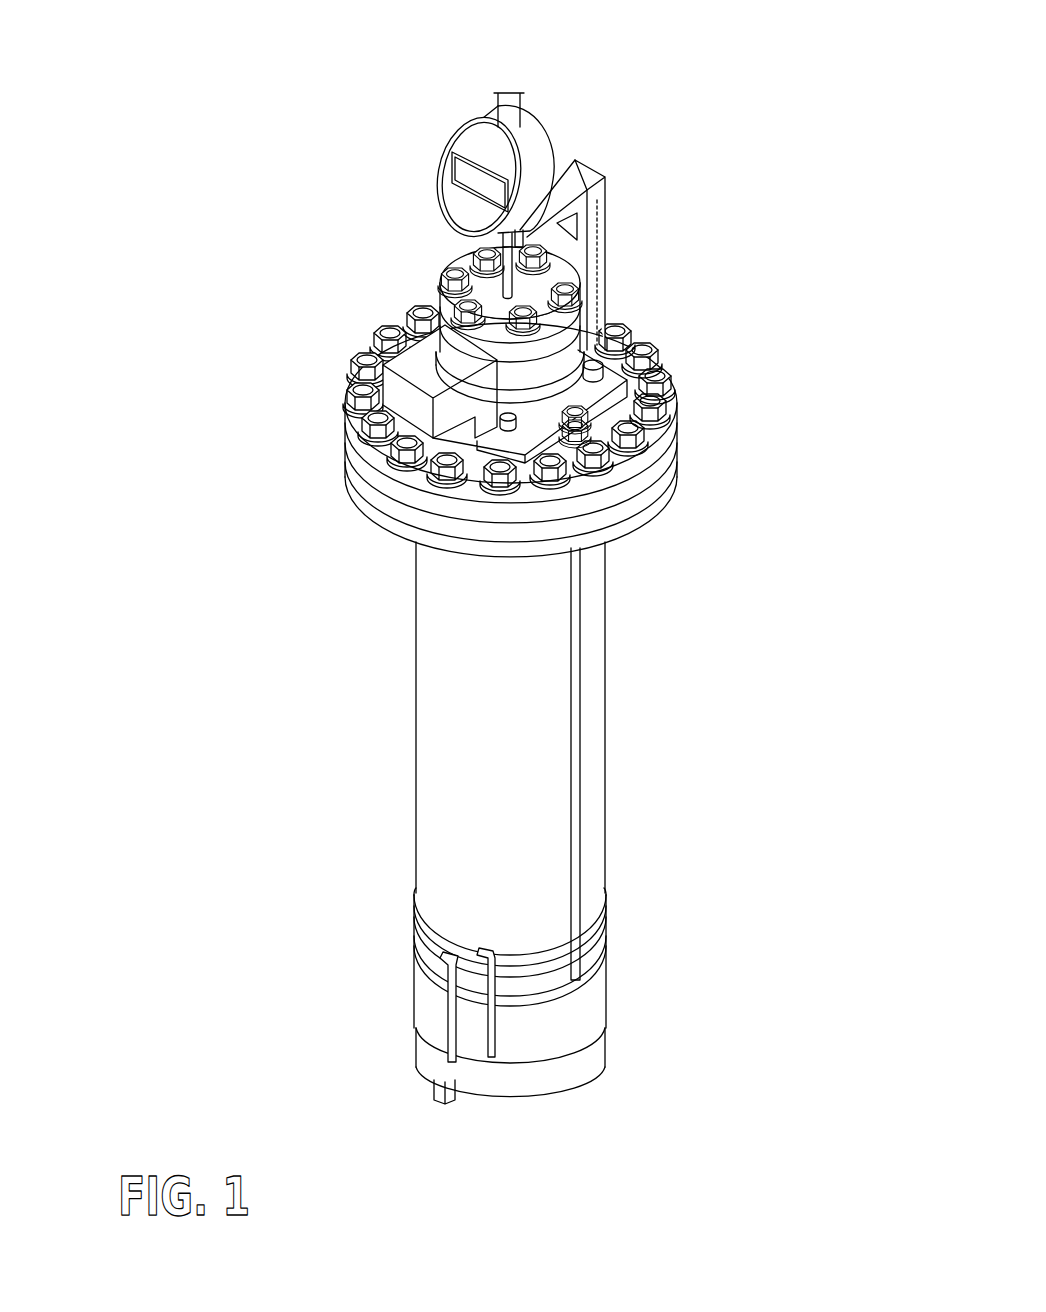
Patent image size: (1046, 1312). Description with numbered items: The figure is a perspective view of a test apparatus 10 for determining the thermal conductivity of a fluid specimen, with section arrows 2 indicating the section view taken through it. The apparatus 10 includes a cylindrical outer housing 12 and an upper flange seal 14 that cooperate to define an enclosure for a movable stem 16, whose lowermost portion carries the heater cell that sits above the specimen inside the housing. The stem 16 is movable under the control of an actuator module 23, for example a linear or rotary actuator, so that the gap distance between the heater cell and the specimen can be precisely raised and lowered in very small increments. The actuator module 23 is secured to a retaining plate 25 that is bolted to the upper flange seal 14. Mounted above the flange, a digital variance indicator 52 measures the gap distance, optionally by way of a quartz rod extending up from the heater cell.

The section line for FIG. 2 is at (506, 73).
The apparatus 10 is at (241, 432).
The cylindrical outer housing 12 is at (600, 703).
The upper flange seal 14 is at (670, 403).
The movable stem 16 is at (520, 383).
The actuator module 23 is at (415, 367).
The retaining plate 25 is at (648, 343).
The digital variance indicator 52 is at (535, 147).